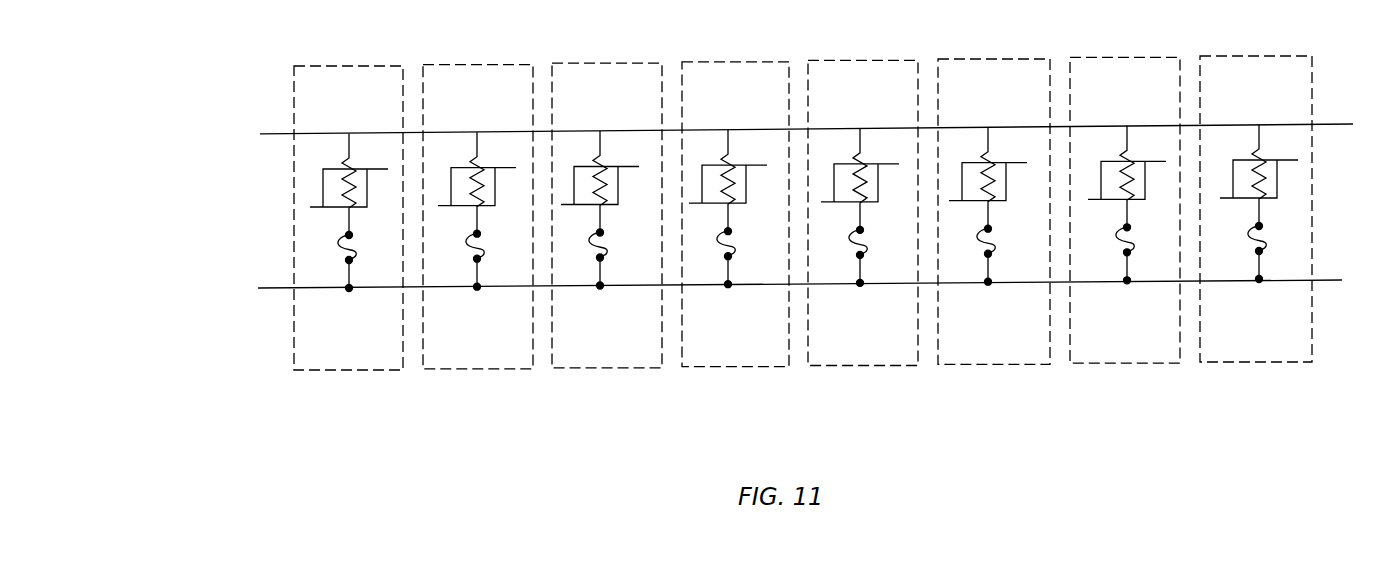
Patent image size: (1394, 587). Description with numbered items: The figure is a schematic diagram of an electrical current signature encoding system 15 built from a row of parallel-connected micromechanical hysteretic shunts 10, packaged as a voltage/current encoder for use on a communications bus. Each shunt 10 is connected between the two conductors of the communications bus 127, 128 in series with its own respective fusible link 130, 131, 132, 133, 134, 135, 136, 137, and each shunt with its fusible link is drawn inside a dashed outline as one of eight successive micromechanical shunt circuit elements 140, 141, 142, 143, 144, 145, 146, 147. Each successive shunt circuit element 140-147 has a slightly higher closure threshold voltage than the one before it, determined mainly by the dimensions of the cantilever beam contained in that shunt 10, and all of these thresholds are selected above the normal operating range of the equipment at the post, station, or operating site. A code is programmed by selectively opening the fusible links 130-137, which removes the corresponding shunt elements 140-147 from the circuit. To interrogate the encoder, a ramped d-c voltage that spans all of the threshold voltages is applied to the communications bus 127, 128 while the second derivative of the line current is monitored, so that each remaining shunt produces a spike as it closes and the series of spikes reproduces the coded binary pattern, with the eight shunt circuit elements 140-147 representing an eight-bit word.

The micromechanical hysteretic shunt 10 is at (323, 196).
The electrical current signature encoding system 15 is at (815, 228).
The communications bus 127 is at (275, 124).
The communications bus 128 is at (277, 278).
The fusible link 130 is at (356, 262).
The fusible link 131 is at (493, 275).
The fusible link 132 is at (620, 274).
The fusible link 133 is at (746, 273).
The fusible link 134 is at (880, 271).
The fusible link 135 is at (1007, 270).
The fusible link 136 is at (1144, 269).
The fusible link 137 is at (1277, 268).
The micromechanical shunt circuit element 140 is at (313, 371).
The micromechanical shunt circuit element 141 is at (438, 371).
The micromechanical shunt circuit element 142 is at (565, 369).
The micromechanical shunt circuit element 143 is at (695, 367).
The micromechanical shunt circuit element 144 is at (821, 366).
The micromechanical shunt circuit element 145 is at (946, 365).
The micromechanical shunt circuit element 146 is at (1074, 364).
The micromechanical shunt circuit element 147 is at (1205, 361).